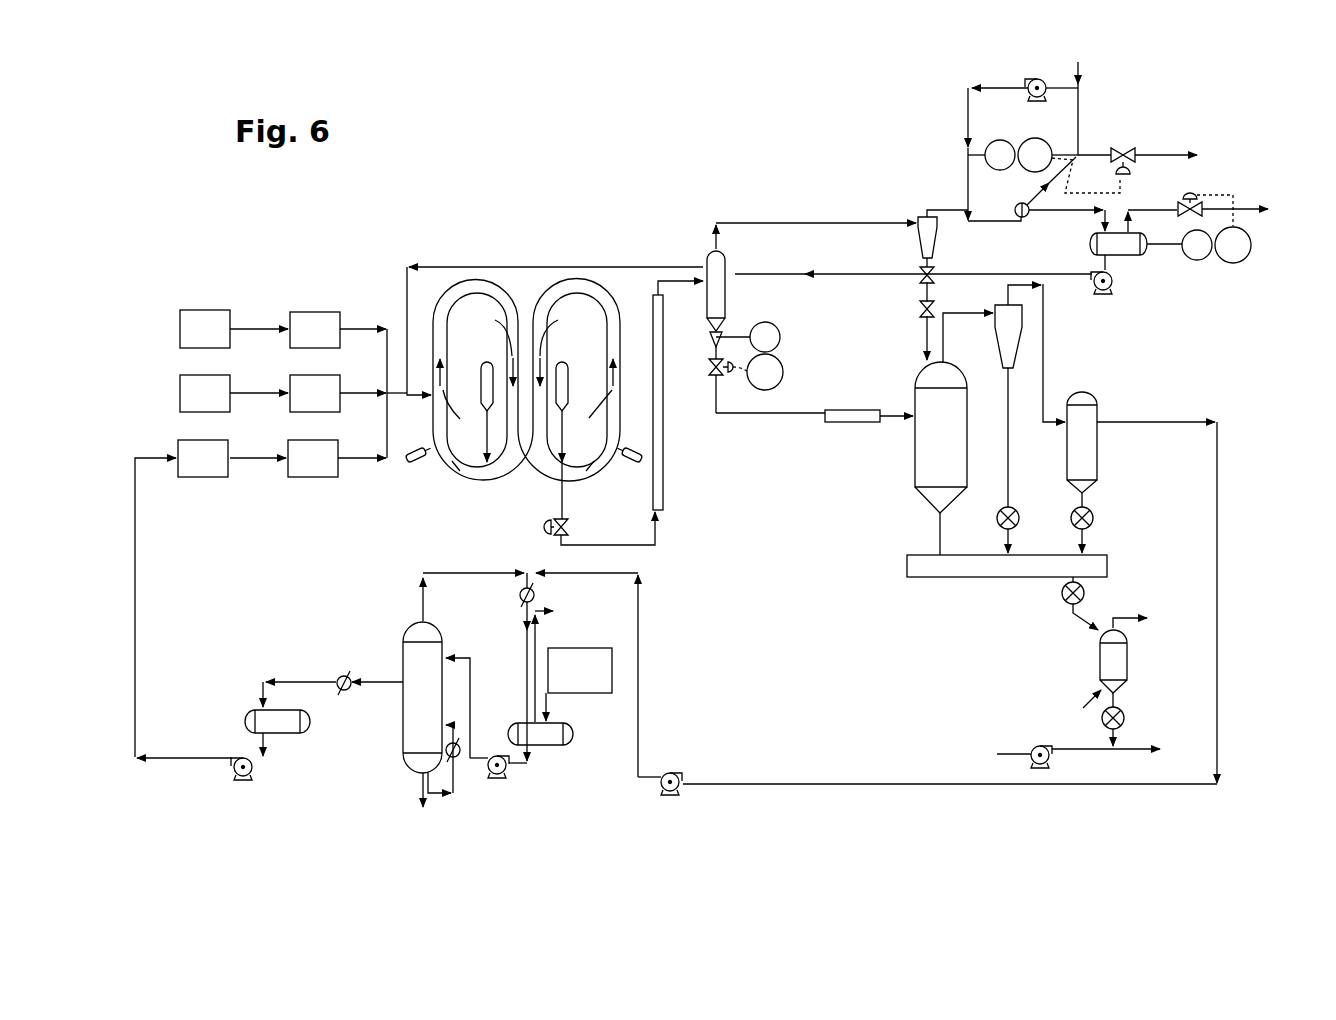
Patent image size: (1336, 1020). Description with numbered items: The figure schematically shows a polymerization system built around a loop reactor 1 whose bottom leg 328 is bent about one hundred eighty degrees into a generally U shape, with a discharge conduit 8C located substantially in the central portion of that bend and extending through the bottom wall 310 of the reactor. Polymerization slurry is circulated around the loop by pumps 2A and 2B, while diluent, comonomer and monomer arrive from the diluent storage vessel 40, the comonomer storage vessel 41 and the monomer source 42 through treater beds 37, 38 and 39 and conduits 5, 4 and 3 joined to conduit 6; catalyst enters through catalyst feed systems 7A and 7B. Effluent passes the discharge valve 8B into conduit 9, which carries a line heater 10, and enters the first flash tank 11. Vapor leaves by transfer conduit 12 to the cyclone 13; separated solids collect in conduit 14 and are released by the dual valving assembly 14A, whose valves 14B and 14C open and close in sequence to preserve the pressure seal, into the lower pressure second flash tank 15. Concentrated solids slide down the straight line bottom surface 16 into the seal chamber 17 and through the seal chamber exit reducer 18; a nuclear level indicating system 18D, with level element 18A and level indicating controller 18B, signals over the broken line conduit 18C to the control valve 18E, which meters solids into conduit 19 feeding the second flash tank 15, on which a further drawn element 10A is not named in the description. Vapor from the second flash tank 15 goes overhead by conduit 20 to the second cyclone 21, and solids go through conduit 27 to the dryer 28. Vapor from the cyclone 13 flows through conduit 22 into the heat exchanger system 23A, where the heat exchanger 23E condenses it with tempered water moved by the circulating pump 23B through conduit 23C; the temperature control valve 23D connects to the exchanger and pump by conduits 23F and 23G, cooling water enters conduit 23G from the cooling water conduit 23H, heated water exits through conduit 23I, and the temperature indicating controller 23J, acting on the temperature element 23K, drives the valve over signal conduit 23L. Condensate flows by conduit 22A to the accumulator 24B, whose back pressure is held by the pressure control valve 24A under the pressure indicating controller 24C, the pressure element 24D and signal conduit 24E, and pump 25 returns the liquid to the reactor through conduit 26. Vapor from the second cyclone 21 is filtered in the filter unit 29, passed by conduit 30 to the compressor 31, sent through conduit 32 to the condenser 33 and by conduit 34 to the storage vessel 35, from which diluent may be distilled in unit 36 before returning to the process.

The loop reactor 1 is at (446, 282).
The pump 2A is at (418, 463).
The pump 2B is at (636, 466).
The conduit 3 is at (370, 327).
The conduit 4 is at (366, 397).
The conduit 5 is at (362, 461).
The conduit 6 is at (407, 400).
The catalyst feed system 7A is at (488, 366).
The catalyst feed system 7B is at (563, 366).
The discharge valve 8B is at (575, 529).
The discharge conduit 8C is at (565, 476).
The conduit 9 is at (657, 282).
The line heater 10 is at (664, 478).
The heat exchanger 10A is at (848, 424).
The first flash tank 11 is at (727, 262).
The transfer conduit 12 is at (757, 222).
The cyclone 13 is at (918, 252).
The conduit 14 is at (934, 292).
The dual valving assembly 14A is at (916, 308).
The valve 14B is at (917, 278).
The valve 14C is at (920, 322).
The second flash tank 15 is at (913, 468).
The straight line bottom surface 16 is at (728, 318).
The seal chamber 17 is at (710, 333).
The seal chamber exit reducer 18 is at (708, 364).
The level element 18A is at (770, 323).
The level indicating controller 18B is at (783, 360).
The signal conduit 18C is at (738, 372).
The nuclear level indicating system 18D is at (799, 375).
The control valve 18E is at (712, 397).
The second transfer conduit 19 is at (768, 418).
The conduit 20 is at (960, 315).
The second cyclone 21 is at (1018, 355).
The conduit 22 is at (929, 208).
The conduit 22A is at (965, 208).
The heat exchanger system 23A is at (1026, 222).
The tempered water circulating pump 23B is at (1030, 78).
The conduit 23C is at (967, 88).
The tempered water temperature control valve 23D is at (1128, 147).
The heat exchanger 23E is at (1018, 219).
The conduit 23F is at (1041, 189).
The conduit 23G is at (1080, 100).
The cooling water conduit 23H is at (1117, 50).
The conduit 23I is at (1183, 154).
The temperature indicating controller 23J is at (1042, 138).
The temperature element 23K is at (992, 142).
The signal conduit 23L is at (1123, 188).
The pressure control valve 24A is at (1200, 200).
The accumulator 24B is at (1125, 258).
The pressure indicating controller 24C is at (1250, 255).
The pressure element 24D is at (1205, 260).
The signal conduit 24E is at (1240, 208).
The pump 25 is at (1105, 298).
The conduit 26 is at (543, 266).
The conduit 27 is at (914, 534).
The dryer 28 is at (1005, 578).
The filter unit 29 is at (1098, 450).
The conduit 30 is at (1140, 420).
The compressor 31 is at (673, 770).
The conduit 32 is at (638, 707).
The condenser 33 is at (520, 594).
The conduit 34 is at (525, 657).
The storage vessel 35 is at (545, 748).
The distillation unit 36 is at (402, 722).
The treater bed 37 is at (318, 478).
The treater bed 38 is at (300, 413).
The treater bed 39 is at (330, 311).
The diluent storage vessel 40 is at (178, 447).
The comonomer storage vessel 41 is at (178, 393).
The monomer source 42 is at (178, 329).
The bottom wall 310 is at (535, 478).
The bottom leg 328 is at (543, 490).